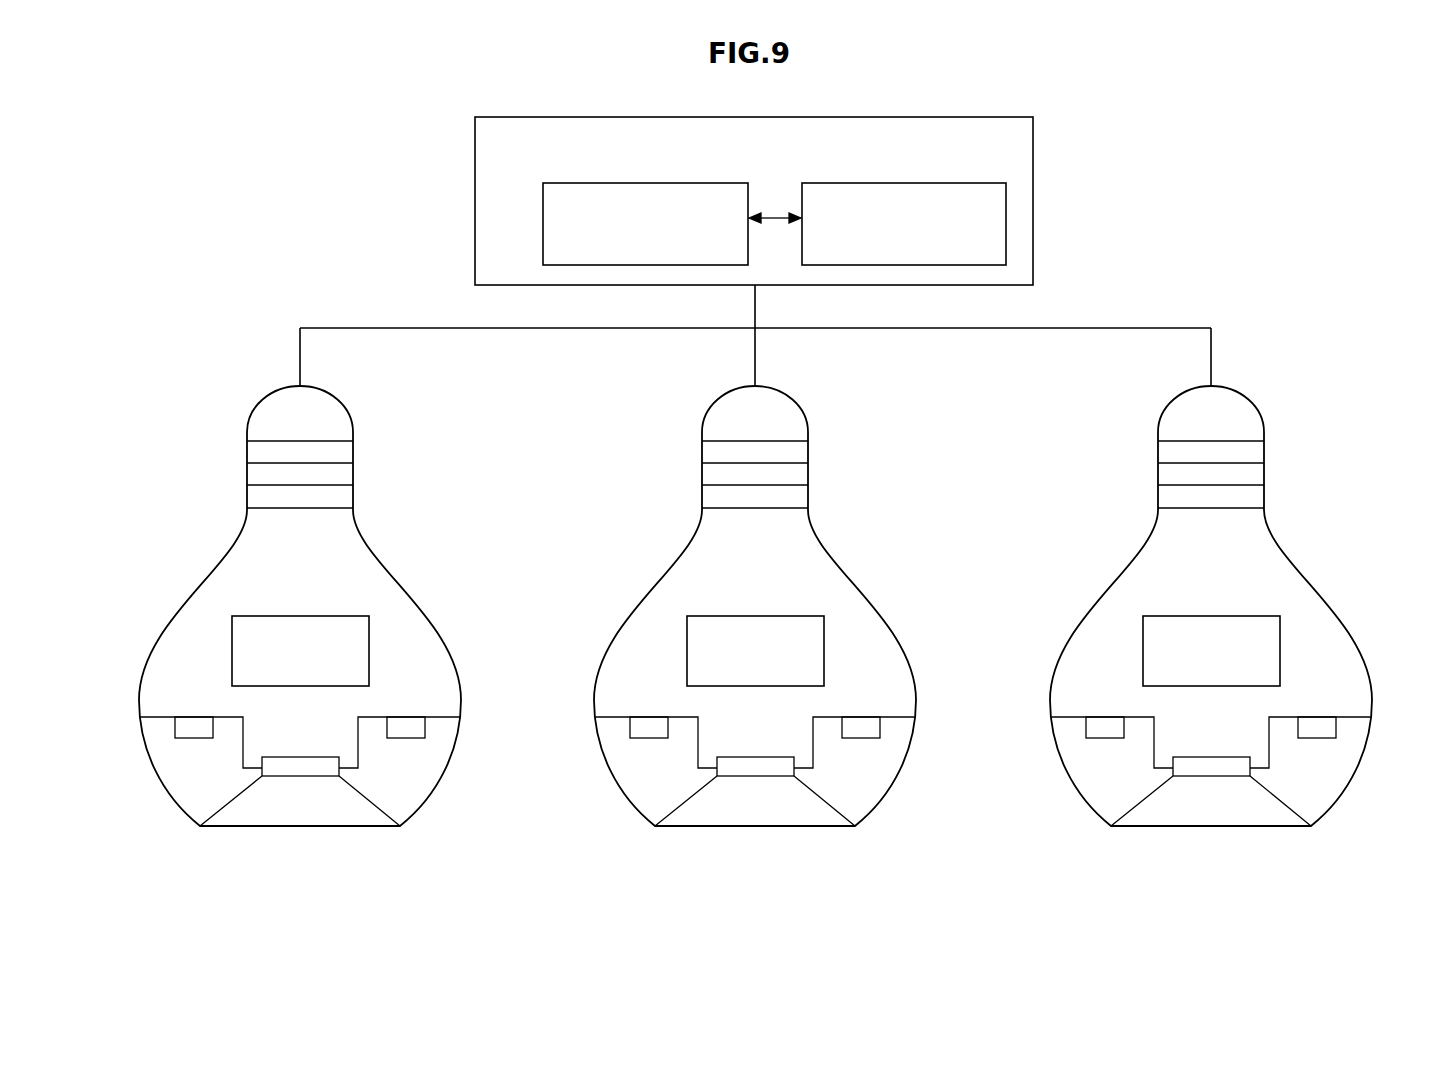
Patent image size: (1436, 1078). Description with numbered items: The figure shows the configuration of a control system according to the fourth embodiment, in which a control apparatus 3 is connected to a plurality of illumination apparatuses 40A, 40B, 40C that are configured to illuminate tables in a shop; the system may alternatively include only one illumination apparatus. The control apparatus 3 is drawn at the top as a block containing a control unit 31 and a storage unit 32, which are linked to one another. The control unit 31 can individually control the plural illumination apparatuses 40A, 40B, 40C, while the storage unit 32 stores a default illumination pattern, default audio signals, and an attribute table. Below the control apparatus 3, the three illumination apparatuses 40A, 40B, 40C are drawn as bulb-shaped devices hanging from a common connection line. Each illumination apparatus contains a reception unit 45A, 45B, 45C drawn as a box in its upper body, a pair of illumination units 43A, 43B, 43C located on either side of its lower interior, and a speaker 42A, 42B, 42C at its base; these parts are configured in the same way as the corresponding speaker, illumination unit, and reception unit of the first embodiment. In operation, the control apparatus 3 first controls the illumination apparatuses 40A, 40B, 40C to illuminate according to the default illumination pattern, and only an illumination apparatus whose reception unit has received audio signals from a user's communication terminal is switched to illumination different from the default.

The control apparatus 3 is at (1035, 158).
The control unit 31 is at (662, 184).
The storage unit 32 is at (940, 184).
The illumination apparatus 40A is at (413, 583).
The illumination apparatus 40B is at (868, 583).
The illumination apparatus 40C is at (1324, 583).
The speaker 42A is at (357, 820).
The speaker 42B is at (812, 820).
The speaker 42C is at (1268, 820).
The illumination unit 43A is at (182, 742).
The illumination unit 43B is at (637, 742).
The illumination unit 43C is at (1093, 742).
The reception unit 45A is at (370, 648).
The reception unit 45B is at (825, 648).
The reception unit 45C is at (1281, 648).